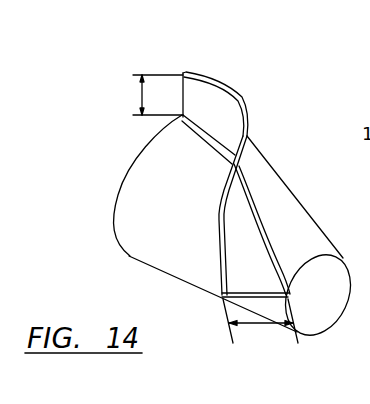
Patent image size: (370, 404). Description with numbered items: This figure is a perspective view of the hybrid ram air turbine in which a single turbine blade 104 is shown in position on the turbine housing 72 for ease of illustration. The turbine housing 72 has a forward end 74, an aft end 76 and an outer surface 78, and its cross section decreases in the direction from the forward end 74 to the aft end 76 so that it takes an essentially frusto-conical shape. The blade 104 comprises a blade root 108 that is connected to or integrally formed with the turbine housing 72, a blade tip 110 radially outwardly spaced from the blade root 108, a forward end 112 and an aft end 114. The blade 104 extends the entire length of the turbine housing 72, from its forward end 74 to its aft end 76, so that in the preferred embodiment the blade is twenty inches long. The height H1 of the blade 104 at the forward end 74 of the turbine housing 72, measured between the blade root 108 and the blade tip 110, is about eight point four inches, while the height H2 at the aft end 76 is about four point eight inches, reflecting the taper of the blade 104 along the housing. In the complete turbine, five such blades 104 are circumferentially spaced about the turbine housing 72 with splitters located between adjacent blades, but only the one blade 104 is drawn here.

The turbine blade 104 is at (99, 118).
The turbine housing 72 is at (268, 162).
The forward end 74 is at (128, 169).
The aft end 76 is at (318, 308).
The outer surface 78 is at (168, 231).
The blade root 108 is at (265, 252).
The blade tip 110 is at (245, 92).
The forward end 112 is at (183, 92).
The aft end 114 is at (241, 299).
The blade height at forward end H1 is at (139, 74).
The blade height at aft end H2 is at (257, 327).